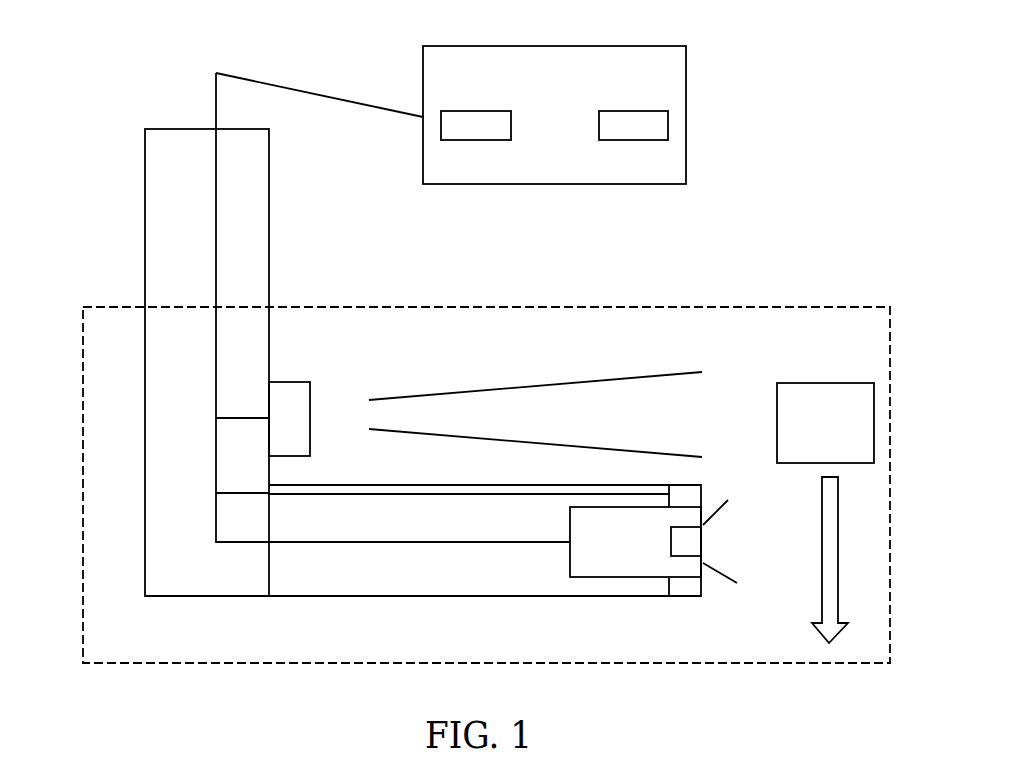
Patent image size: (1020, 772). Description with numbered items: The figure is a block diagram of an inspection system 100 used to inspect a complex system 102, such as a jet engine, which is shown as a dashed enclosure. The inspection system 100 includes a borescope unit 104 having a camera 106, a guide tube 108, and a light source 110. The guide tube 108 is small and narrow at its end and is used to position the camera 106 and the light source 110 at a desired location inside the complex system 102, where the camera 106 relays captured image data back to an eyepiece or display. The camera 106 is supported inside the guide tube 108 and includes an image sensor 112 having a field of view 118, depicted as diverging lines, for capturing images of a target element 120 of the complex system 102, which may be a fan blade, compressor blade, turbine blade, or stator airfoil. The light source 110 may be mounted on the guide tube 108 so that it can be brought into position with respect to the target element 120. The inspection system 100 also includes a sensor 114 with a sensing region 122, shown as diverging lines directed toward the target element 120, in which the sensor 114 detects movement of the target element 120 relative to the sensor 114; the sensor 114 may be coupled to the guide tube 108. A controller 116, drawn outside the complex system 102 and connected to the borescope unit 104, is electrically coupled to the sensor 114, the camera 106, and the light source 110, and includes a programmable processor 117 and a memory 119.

The inspection system 100 is at (464, 331).
The complex system 102 is at (783, 307).
The borescope unit 104 is at (114, 207).
The camera 106 is at (590, 577).
The guide tube 108 is at (270, 268).
The light source 110 is at (695, 596).
The image sensor 112 is at (688, 556).
The sensor 114 is at (290, 382).
The controller 116 is at (612, 46).
The programmable processor 117 is at (476, 140).
The field of view 118 is at (736, 558).
The memory 119 is at (668, 126).
The target element 120 is at (823, 383).
The sensing region 122 is at (690, 398).